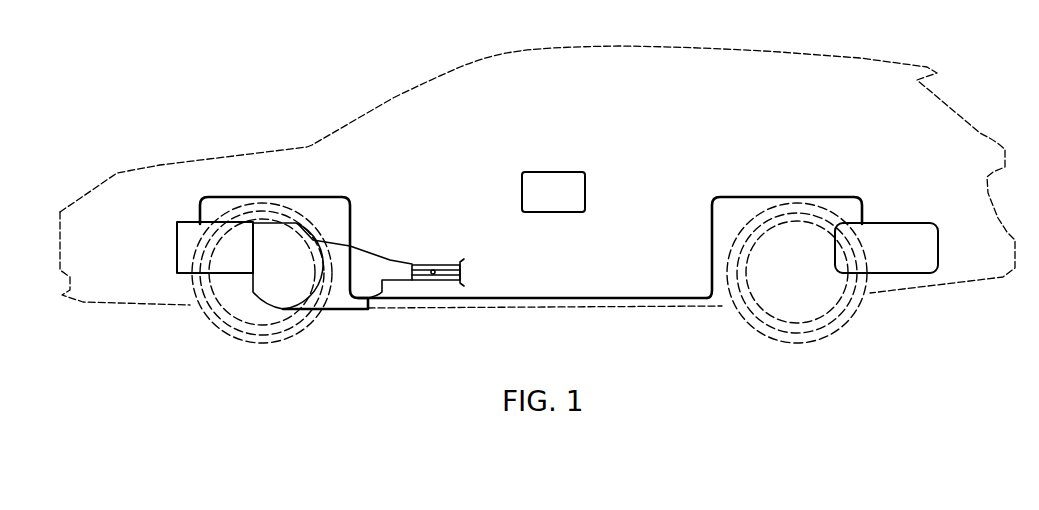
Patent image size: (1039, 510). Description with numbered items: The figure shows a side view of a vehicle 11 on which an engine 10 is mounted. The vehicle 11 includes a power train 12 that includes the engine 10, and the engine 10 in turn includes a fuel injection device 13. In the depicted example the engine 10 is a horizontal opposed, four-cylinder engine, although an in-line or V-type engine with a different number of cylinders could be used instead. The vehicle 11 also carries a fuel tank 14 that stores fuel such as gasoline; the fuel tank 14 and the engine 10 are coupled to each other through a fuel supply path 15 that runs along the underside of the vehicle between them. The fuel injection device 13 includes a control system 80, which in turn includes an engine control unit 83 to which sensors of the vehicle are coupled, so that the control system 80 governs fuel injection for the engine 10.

The vehicle 11 is at (173, 80).
The fuel injection device 13 is at (174, 204).
The engine 10 is at (177, 237).
The power train 12 is at (378, 249).
The fuel supply path 15 is at (565, 295).
The engine control unit 83 is at (550, 172).
The control system 80 is at (600, 166).
The fuel tank 14 is at (899, 222).